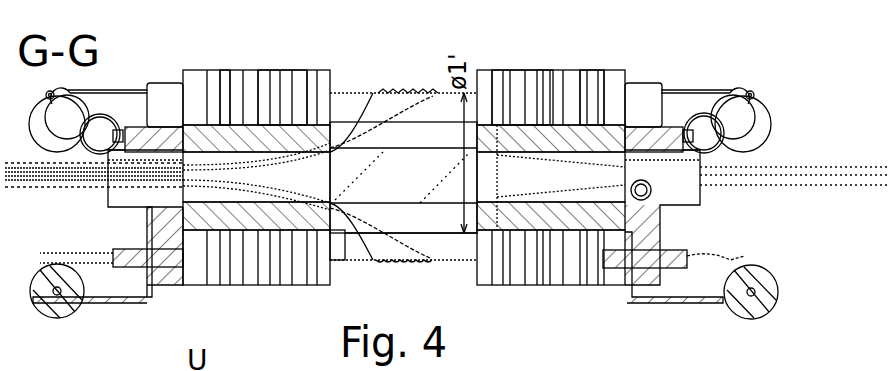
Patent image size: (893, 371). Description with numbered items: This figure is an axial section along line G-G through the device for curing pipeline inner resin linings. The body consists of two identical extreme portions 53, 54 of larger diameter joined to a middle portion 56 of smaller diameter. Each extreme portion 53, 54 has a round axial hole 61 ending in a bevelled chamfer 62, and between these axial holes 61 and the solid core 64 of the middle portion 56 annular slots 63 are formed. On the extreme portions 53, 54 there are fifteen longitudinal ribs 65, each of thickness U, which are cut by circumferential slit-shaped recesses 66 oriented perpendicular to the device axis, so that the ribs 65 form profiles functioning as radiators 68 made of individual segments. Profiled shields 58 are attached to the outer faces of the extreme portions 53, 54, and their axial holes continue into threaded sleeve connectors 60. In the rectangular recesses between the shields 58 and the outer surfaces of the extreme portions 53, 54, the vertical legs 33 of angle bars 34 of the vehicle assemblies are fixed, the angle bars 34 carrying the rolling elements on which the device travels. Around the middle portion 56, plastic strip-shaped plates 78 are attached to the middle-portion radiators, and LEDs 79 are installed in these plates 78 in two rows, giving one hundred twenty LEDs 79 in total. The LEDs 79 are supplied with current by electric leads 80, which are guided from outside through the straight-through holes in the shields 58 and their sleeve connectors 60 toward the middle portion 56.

The vertical leg 33 is at (180, 253).
The angle bar 34 is at (177, 268).
The extreme portion 53 is at (207, 213).
The extreme portion 54 is at (507, 218).
The middle portion 56 is at (340, 252).
The profiled shield 58 is at (163, 100).
The threaded sleeve connector 60 is at (683, 208).
The round axial hole 61 is at (215, 197).
The bevelled chamfer 62 is at (318, 207).
The annular slot 63 is at (330, 148).
The solid core 64 is at (397, 167).
The longitudinal rib 65 is at (323, 46).
The circumferential slit-shaped recess 66 is at (248, 46).
The radiator 68 is at (630, 46).
The plastic strip-shaped plate 78 is at (377, 262).
The LED 79 is at (395, 262).
The electric lead 80 is at (103, 163).